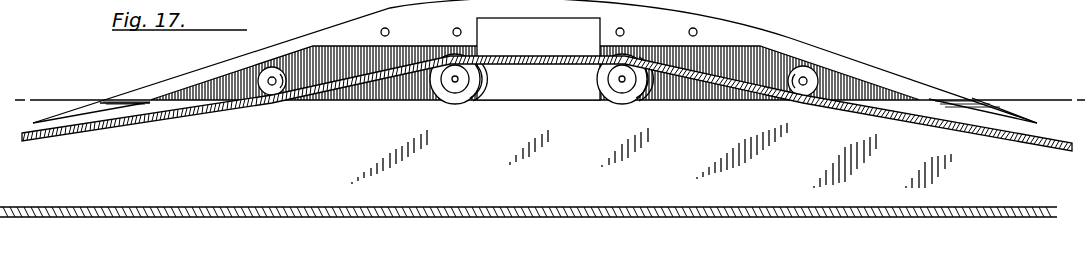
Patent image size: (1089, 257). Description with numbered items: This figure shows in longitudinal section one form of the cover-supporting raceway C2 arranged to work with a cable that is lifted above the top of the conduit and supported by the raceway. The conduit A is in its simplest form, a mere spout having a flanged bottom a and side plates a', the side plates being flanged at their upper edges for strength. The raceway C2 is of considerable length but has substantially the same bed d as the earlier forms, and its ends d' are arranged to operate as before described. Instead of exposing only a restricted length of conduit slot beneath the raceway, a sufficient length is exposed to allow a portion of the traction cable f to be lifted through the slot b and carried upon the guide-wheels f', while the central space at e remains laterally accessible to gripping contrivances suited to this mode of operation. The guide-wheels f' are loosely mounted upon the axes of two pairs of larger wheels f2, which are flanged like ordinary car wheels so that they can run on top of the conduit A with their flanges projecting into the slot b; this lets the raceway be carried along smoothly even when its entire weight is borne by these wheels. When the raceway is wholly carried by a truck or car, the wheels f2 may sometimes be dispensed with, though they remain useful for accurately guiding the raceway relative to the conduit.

The bed d is at (535, 61).
The ends d' is at (526, 107).
The raceway C2 is at (535, 56).
The central space e is at (538, 59).
The traction-cable f is at (547, 103).
The guide-wheels f' is at (538, 82).
The larger wheels f2 is at (619, 99).
The side plates a' is at (379, 157).
The conduit A is at (730, 155).
The flanged bottom a is at (528, 199).
The slot b is at (1002, 108).